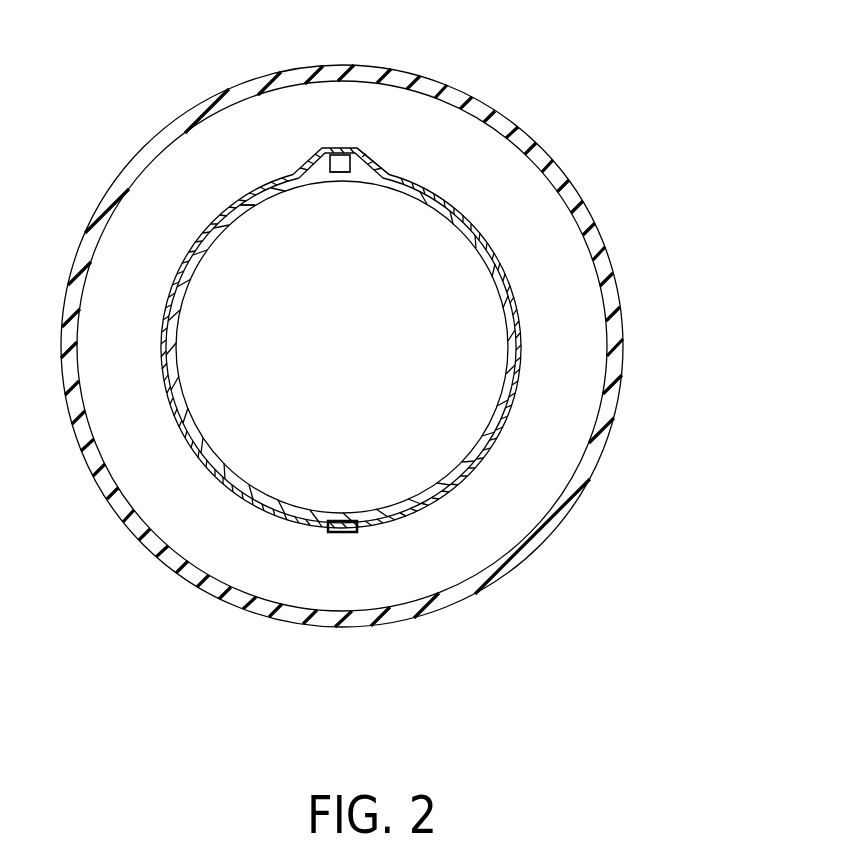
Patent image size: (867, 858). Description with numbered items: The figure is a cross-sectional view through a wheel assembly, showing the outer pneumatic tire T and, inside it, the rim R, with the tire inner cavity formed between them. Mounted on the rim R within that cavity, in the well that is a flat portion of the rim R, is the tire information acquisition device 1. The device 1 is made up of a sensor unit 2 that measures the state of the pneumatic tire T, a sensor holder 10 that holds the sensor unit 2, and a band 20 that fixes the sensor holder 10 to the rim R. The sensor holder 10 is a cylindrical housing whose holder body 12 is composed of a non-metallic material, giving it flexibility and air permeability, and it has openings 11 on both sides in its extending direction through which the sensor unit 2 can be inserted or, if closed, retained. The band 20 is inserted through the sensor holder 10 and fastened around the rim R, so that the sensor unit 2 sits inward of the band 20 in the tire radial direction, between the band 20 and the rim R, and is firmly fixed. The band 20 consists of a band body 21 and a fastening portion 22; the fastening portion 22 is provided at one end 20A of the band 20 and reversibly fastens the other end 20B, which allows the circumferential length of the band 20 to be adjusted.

The pneumatic tire T is at (178, 103).
The tire information acquisition device 1 is at (340, 155).
The sensor holder 10 is at (350, 136).
The openings 11 is at (291, 160).
The sensor unit 2 is at (342, 160).
The holder body 12 is at (368, 168).
The band 20 is at (481, 208).
The band body 21 is at (504, 259).
The fastening portion 22 is at (342, 630).
The one end of the band 20A is at (338, 533).
The other end of the band 20B is at (420, 514).
The rim R is at (267, 193).